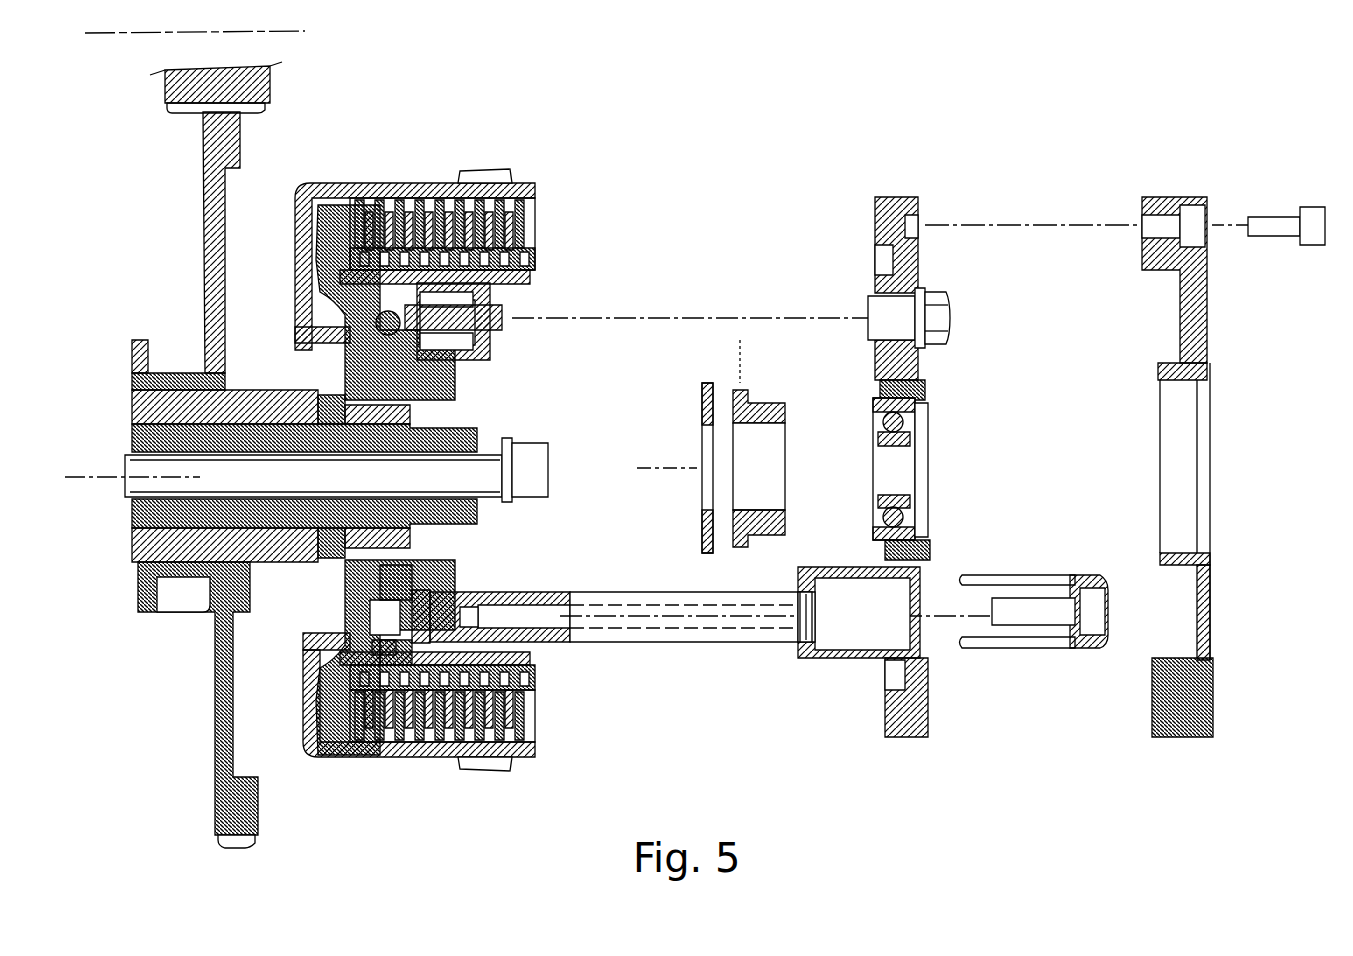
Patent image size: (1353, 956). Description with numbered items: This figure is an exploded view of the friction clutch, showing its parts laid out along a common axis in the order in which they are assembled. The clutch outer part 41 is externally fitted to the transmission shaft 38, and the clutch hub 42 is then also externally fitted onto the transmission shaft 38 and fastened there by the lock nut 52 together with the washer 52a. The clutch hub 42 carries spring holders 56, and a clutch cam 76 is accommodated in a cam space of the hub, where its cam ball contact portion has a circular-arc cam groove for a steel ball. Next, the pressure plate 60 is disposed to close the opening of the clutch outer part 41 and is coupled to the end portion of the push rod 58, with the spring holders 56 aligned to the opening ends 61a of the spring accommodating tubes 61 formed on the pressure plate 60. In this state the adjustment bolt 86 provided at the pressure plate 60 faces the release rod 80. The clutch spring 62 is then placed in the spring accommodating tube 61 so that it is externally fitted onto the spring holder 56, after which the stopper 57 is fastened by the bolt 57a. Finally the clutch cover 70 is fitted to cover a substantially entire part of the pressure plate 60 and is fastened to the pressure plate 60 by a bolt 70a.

The transmission shaft 38 is at (135, 438).
The clutch outer part 41 is at (318, 185).
The clutch hub 42 is at (318, 256).
The lock nut 52 is at (745, 400).
The washer 52a is at (700, 398).
The spring holder 56 is at (525, 590).
The stopper 57 is at (1080, 650).
The bolt 57a is at (1100, 610).
The push rod 58 is at (145, 483).
The pressure plate 60 is at (890, 197).
The spring accommodating tube 61 is at (845, 660).
The opening end 61a is at (800, 628).
The clutch spring 62 is at (1012, 650).
The clutch cover 70 is at (1160, 197).
The bolt 70a is at (1312, 207).
The clutch cam 76 is at (515, 313).
The release rod 80 is at (470, 330).
The adjustment bolt 86 is at (940, 313).